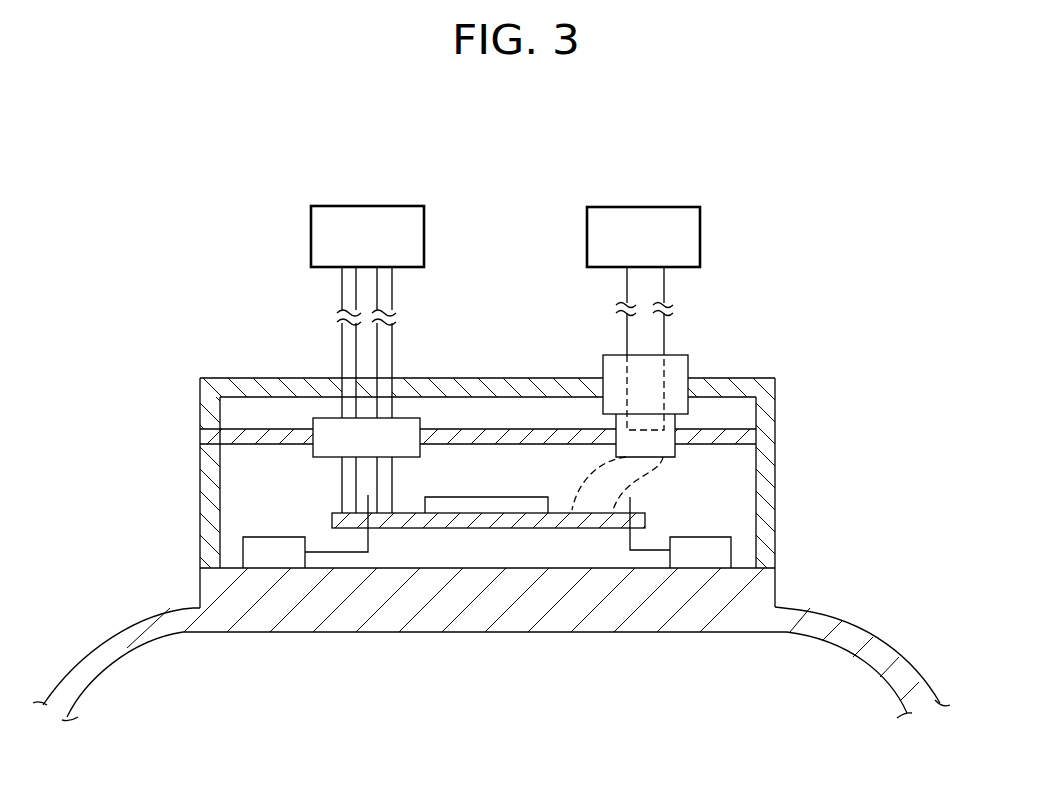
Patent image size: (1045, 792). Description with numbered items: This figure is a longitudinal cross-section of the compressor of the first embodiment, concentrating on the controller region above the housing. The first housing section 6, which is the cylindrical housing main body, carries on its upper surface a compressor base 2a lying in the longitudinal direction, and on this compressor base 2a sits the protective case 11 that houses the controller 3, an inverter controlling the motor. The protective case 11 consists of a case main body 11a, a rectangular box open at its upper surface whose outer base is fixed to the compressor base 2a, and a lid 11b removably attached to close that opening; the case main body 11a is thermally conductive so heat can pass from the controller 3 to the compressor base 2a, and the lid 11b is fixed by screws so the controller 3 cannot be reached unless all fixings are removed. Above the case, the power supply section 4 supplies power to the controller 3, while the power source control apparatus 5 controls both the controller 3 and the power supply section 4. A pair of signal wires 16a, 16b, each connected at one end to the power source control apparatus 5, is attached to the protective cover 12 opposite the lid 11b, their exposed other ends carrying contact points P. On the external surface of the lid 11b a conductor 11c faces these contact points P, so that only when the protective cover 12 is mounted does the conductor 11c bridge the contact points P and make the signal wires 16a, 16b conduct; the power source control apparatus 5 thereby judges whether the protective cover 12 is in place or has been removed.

The controller 3 is at (538, 528).
The power supply section 4 is at (389, 206).
The power source control apparatus 5 is at (656, 207).
The first housing section 6 is at (833, 617).
The compressor base 2a is at (775, 588).
The protective case 11 is at (815, 350).
The case main body 11a is at (775, 473).
The lid 11b is at (748, 427).
The conductor 11c is at (650, 435).
The protective cover 12 is at (760, 378).
The signal wire 16a is at (627, 333).
The signal wire 16b is at (665, 338).
The contact point P is at (828, 379).